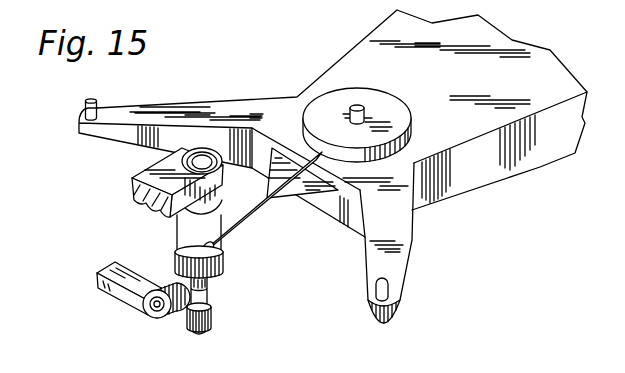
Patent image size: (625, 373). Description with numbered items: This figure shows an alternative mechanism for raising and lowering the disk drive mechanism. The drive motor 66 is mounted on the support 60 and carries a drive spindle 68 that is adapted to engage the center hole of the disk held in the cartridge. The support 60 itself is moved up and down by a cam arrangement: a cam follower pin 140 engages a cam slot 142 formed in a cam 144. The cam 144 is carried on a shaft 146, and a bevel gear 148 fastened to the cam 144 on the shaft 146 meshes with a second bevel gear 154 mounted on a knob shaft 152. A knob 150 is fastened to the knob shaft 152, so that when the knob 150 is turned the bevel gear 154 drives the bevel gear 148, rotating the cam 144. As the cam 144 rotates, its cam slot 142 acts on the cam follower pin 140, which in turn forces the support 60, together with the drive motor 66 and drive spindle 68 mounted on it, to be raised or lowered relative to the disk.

The support 60 is at (540, 167).
The drive motor 66 is at (410, 115).
The drive spindle 68 is at (357, 106).
The cam follower pin 140 is at (262, 212).
The cam slot 142 is at (222, 235).
The cam 144 is at (180, 242).
The shaft 146 is at (212, 297).
The bevel gear 148 is at (222, 275).
The knob 150 is at (97, 283).
The knob shaft 152 is at (148, 314).
The bevel gear 154 is at (217, 319).